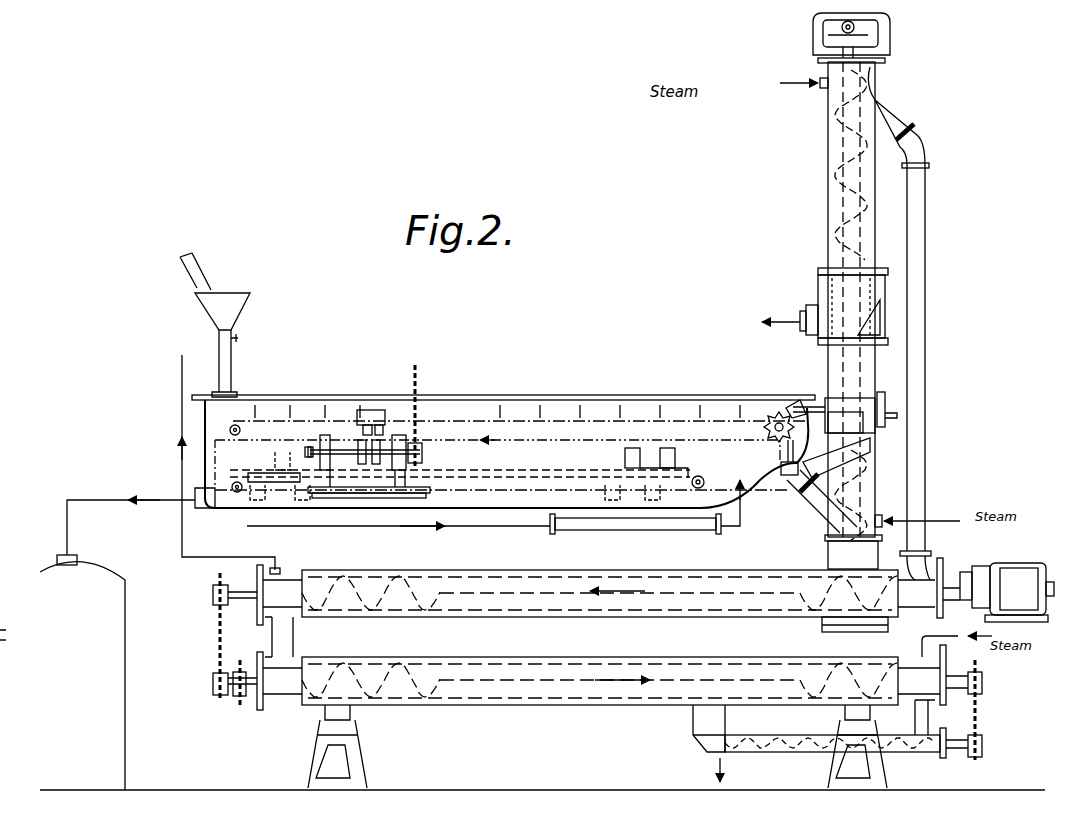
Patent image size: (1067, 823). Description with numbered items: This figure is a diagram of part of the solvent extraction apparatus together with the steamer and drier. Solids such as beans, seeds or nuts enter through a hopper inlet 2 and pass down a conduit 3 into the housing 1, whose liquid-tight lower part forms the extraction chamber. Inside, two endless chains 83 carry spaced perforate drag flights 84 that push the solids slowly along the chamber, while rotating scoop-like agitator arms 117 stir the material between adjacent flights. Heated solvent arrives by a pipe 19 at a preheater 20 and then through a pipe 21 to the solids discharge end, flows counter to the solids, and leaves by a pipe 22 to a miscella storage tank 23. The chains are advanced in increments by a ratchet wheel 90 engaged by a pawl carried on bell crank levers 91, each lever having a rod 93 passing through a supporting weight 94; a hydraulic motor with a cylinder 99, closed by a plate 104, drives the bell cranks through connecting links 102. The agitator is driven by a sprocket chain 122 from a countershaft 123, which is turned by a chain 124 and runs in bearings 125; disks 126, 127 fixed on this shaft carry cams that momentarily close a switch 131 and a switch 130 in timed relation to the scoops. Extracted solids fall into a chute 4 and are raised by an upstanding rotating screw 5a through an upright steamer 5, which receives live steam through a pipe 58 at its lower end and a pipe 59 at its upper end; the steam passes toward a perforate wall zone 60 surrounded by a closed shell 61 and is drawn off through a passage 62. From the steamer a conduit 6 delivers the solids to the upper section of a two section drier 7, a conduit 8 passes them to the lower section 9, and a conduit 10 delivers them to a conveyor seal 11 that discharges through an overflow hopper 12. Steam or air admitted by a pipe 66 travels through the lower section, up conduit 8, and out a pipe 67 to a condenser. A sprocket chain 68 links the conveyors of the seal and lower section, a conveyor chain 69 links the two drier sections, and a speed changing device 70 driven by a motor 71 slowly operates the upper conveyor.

The housing 1 is at (555, 398).
The hopper inlet 2 is at (215, 310).
The conduit 3 is at (219, 360).
The chute 4 is at (808, 501).
The upright steamer 5 is at (828, 228).
The upstanding rotating screw 5a is at (830, 138).
The conduit 6 is at (895, 115).
The two section drier 7 is at (695, 614).
The conduit 8 is at (293, 637).
The lower section of the drier 9 is at (455, 692).
The conduit 10 is at (928, 716).
The conveyor seal 11 is at (805, 750).
The overflow hopper 12 is at (705, 746).
The pipe 19 is at (480, 534).
The preheater 20 is at (640, 531).
The pipe 21 is at (742, 530).
The pipe 22 is at (96, 498).
The miscella storage tank 23 is at (110, 690).
The pipe 58 is at (955, 523).
The pipe 59 is at (795, 80).
The perforate wall zone 60 is at (880, 327).
The closed shell or housing 61 is at (885, 290).
The outwardly extending passage 62 is at (800, 310).
The pipe 66 is at (926, 637).
The pipe 67 is at (182, 552).
The sprocket chain 68 is at (980, 715).
The conveyor chain 69 is at (214, 635).
The speed changing device 70 is at (978, 575).
The motor 71 is at (1019, 592).
The endless chains 83 is at (520, 492).
The perforate plates or drag flights 84 is at (676, 492).
The ratchet wheel 90 is at (765, 430).
The bell crank levers 91 is at (786, 410).
The rod 93 is at (788, 456).
The supporting weight 94 is at (781, 475).
The cylinder 99 is at (860, 408).
The connecting links or rods 102 is at (807, 407).
The plate 104 is at (885, 400).
The agitator arms 117 is at (625, 453).
The sprocket chain 122 is at (322, 466).
The countershaft 123 is at (340, 450).
The chain 124 is at (385, 425).
The bearings 125 is at (320, 445).
The disk 126 is at (362, 466).
The disk 127 is at (376, 466).
The switch 130 is at (414, 400).
The switch 131 is at (368, 410).